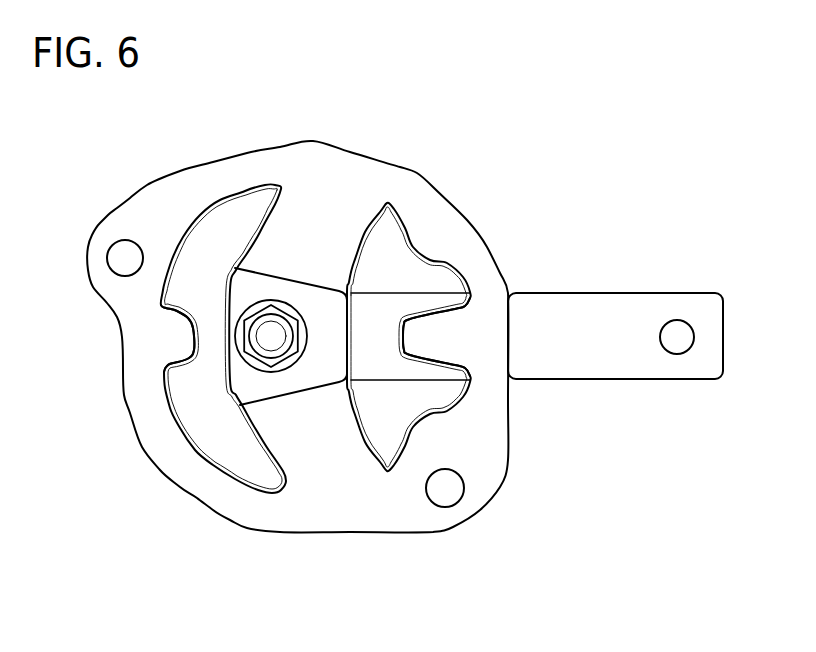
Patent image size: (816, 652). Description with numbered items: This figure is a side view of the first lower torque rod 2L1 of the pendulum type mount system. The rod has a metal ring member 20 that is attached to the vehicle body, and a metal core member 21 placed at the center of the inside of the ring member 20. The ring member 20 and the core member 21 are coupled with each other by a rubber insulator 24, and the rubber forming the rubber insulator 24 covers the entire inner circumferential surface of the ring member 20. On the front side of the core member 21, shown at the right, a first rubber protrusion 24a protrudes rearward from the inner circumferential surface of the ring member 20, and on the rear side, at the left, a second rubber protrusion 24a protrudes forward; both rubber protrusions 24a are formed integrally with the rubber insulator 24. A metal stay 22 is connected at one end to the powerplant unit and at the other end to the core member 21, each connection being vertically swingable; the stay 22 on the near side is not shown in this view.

The first lower torque rod 2L1 is at (547, 197).
The ring member 20 is at (176, 455).
The core member 21 is at (253, 290).
The stay 22 is at (590, 360).
The rubber insulator 24 is at (312, 235).
The rubber protrusion 24a is at (175, 337).